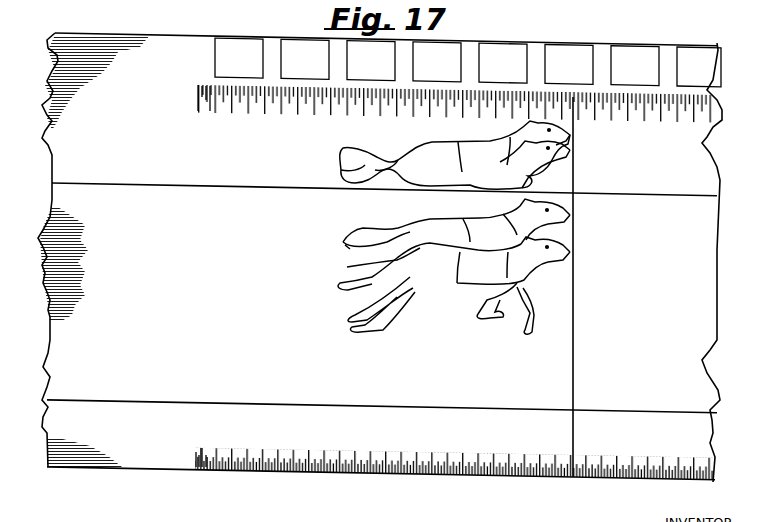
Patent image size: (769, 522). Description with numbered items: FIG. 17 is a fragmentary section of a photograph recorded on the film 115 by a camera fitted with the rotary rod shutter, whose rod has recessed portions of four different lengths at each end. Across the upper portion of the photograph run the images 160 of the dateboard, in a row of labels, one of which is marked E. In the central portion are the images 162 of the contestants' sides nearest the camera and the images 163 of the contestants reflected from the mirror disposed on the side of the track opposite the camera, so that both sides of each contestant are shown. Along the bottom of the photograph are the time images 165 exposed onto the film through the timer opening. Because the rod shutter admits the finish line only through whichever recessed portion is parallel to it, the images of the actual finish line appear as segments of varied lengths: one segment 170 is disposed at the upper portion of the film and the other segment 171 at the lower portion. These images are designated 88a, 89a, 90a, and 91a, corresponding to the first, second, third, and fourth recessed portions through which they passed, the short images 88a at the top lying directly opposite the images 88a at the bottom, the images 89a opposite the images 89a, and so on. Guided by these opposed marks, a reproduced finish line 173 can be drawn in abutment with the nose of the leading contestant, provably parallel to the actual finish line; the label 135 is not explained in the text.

The film 115 is at (55, 305).
The film frame area 135 is at (386, 23).
The images of the dateboard 160 is at (564, 46).
The images of the contestant's side nearest the camera 162 is at (352, 288).
The images of the contestants reflected from the mirror 163 is at (350, 150).
The time images 165 is at (370, 416).
The upper finish line segment 170 is at (708, 106).
The lower finish line segment 171 is at (298, 478).
The reproduced finish line 173 is at (573, 298).
The finish line images through first recessed portion 88a is at (198, 88).
The finish line images through second recessed portion 89a is at (200, 86).
The finish line images through third recessed portion 90a is at (203, 85).
The finish line images through fourth recessed portion 91a is at (210, 108).
The label box E is at (704, 43).